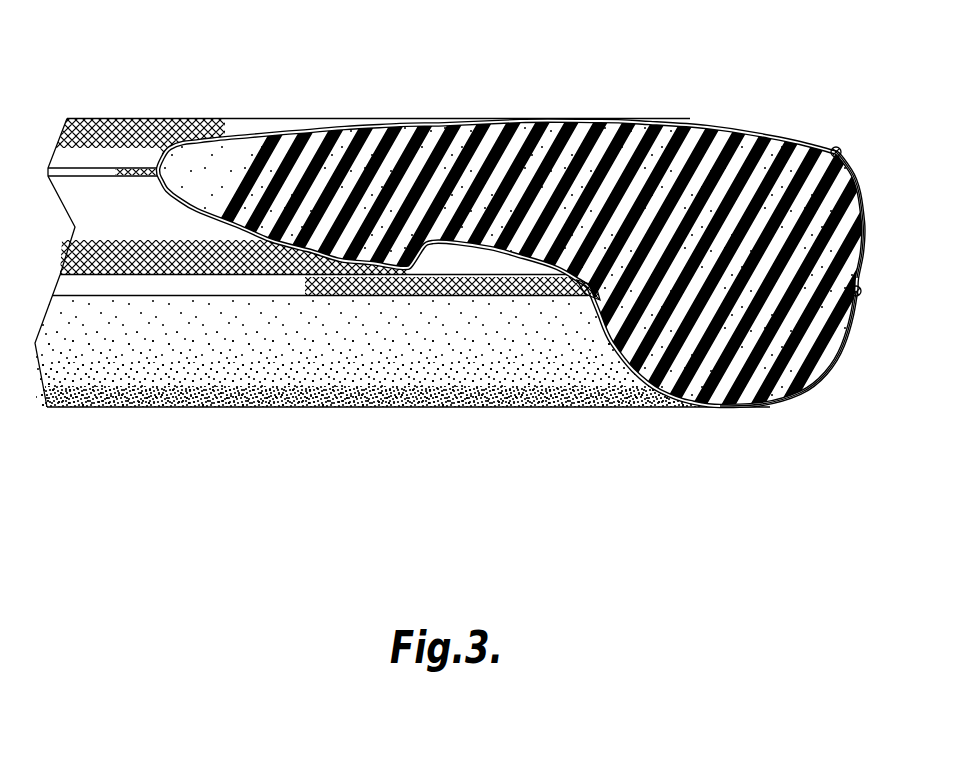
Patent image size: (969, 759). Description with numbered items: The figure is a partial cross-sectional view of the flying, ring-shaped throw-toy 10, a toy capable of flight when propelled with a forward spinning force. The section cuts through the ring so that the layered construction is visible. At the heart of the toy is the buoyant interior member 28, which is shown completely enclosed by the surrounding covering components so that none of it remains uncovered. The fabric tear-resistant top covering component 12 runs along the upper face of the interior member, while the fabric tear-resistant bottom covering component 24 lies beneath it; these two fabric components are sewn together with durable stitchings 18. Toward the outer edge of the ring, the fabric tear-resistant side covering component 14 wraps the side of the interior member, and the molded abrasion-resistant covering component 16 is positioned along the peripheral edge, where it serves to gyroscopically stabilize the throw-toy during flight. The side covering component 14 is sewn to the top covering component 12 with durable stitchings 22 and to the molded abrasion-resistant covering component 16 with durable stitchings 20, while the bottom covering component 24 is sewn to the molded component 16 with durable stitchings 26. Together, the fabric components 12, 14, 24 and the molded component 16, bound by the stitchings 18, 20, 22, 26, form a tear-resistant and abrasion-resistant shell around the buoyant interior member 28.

The flying ring-shaped throw-toy 10 is at (231, 97).
The fabric tear-resistant top covering component 12 is at (541, 228).
The fabric tear-resistant side covering component 14 is at (862, 200).
The molded abrasion-resistant covering component 16 is at (823, 380).
The durable stitchings 18 is at (143, 177).
The durable stitchings 20 is at (861, 291).
The durable stitchings 22 is at (835, 148).
The fabric tear-resistant bottom covering component 24 is at (308, 280).
The durable stitchings 26 is at (574, 292).
The buoyant interior member 28 is at (752, 146).